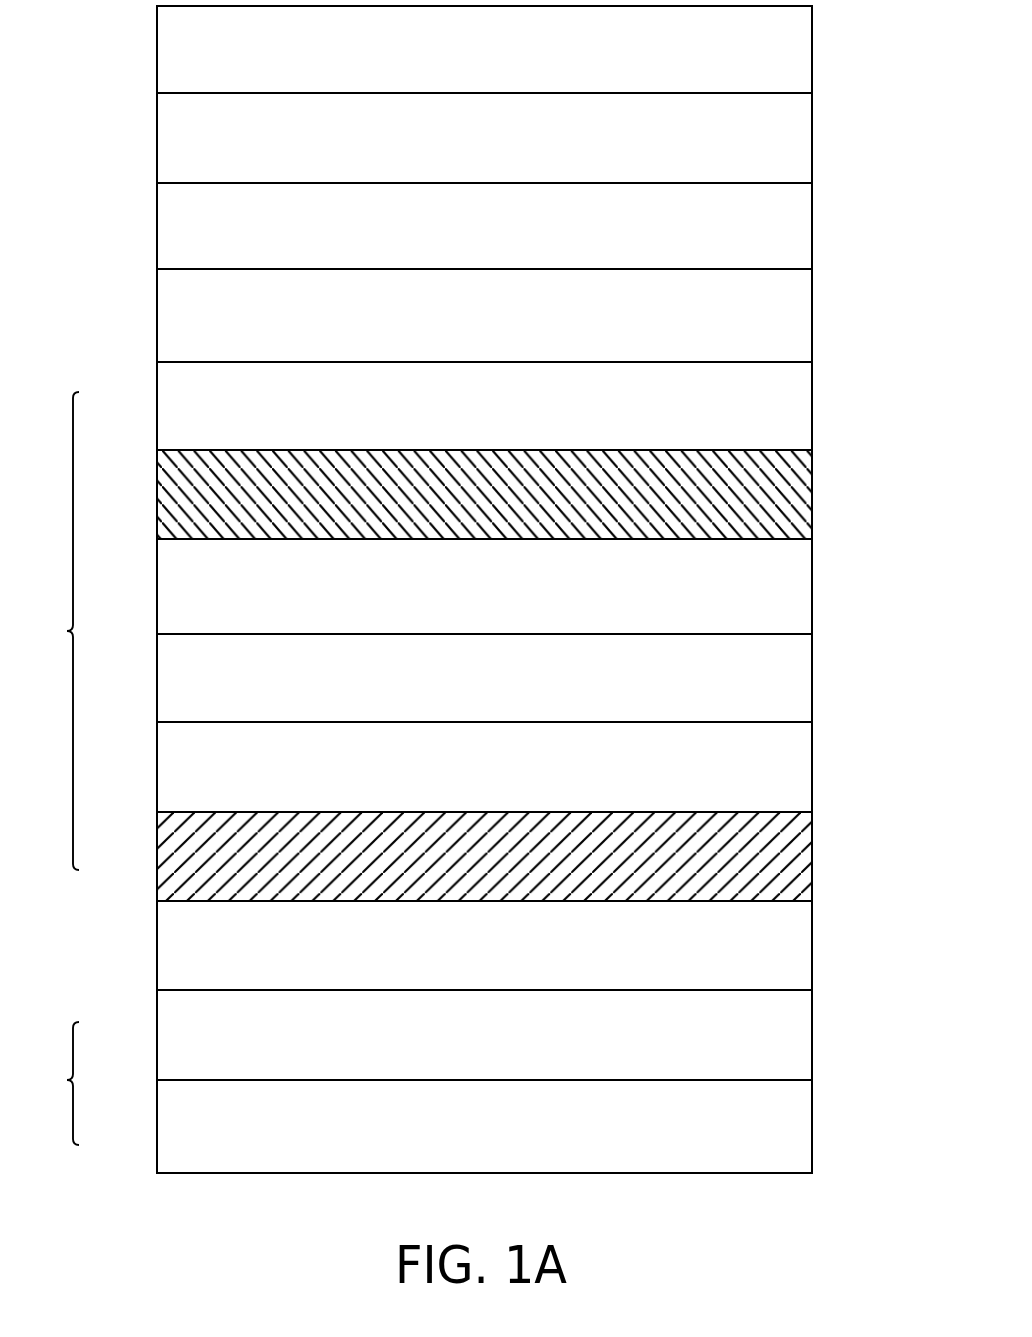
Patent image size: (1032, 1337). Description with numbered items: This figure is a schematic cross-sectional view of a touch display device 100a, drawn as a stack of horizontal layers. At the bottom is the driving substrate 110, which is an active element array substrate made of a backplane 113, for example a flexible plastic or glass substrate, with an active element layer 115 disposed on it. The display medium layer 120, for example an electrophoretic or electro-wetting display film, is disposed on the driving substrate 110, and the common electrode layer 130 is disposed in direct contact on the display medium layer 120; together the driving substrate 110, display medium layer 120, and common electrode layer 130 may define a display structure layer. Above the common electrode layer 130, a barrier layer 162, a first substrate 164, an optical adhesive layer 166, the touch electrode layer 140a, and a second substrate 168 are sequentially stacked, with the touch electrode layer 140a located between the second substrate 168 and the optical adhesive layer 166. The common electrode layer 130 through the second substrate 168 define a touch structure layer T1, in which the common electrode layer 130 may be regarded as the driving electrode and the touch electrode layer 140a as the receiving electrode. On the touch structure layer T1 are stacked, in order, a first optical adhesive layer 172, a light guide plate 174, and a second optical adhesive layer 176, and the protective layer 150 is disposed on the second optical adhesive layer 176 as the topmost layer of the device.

The touch display device 100a is at (922, 1218).
The driving substrate 110 is at (418, 1081).
The backplane 113 is at (163, 1130).
The active element layer 115 is at (163, 1039).
The display medium layer 120 is at (163, 952).
The common electrode layer 130 is at (163, 859).
The touch electrode layer 140a is at (163, 496).
The barrier layer 162 is at (163, 768).
The first substrate 164 is at (163, 681).
The optical adhesive layer 166 is at (163, 590).
The second substrate 168 is at (163, 406).
The first optical adhesive layer 172 is at (163, 312).
The light guide plate 174 is at (163, 230).
The second optical adhesive layer 176 is at (163, 135).
The protective layer 150 is at (163, 50).
The touch structure layer T1 is at (58, 631).